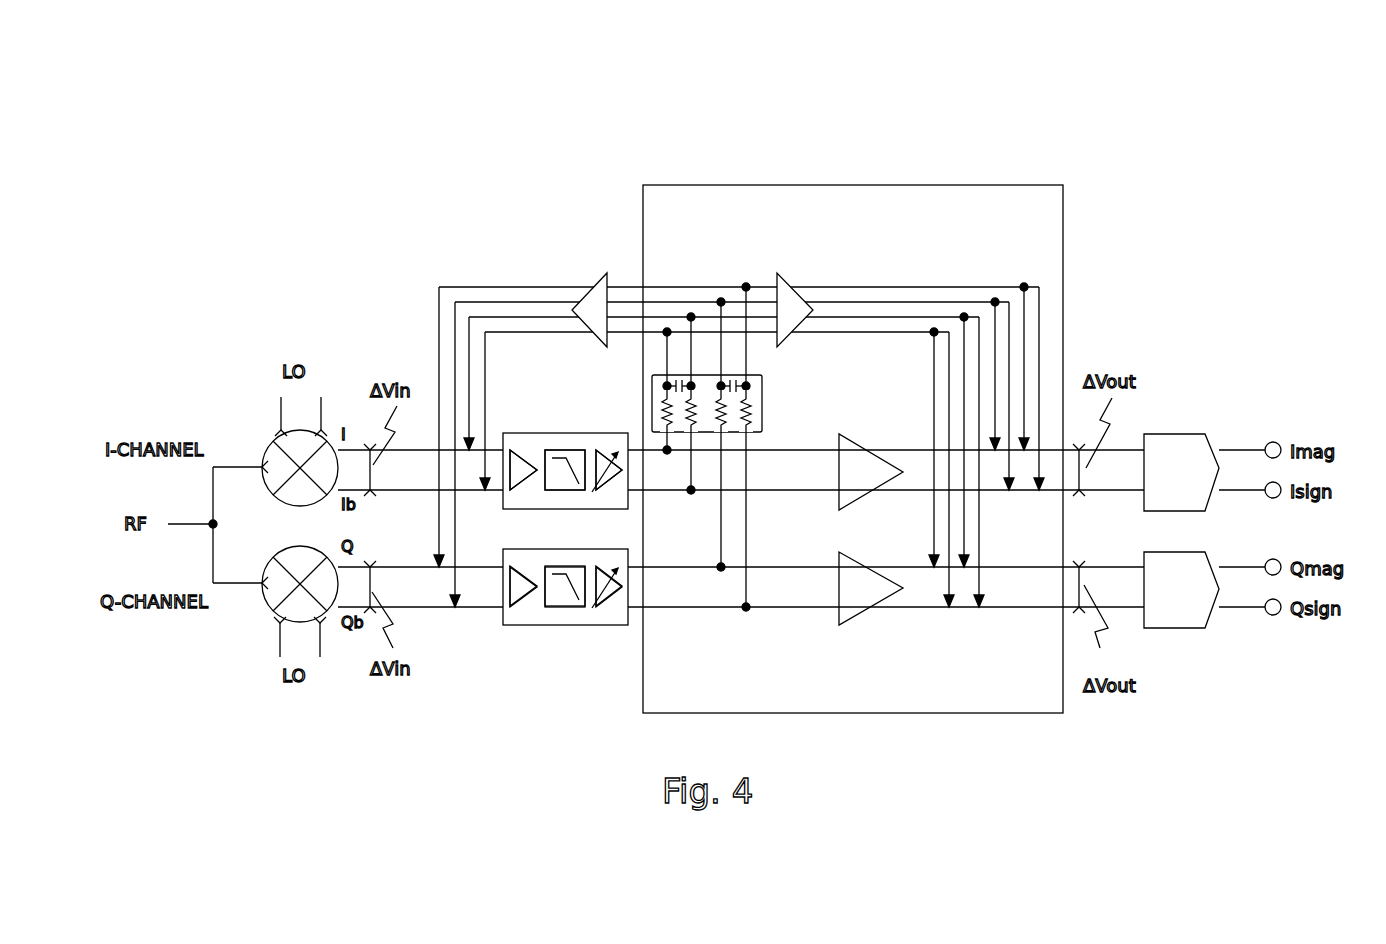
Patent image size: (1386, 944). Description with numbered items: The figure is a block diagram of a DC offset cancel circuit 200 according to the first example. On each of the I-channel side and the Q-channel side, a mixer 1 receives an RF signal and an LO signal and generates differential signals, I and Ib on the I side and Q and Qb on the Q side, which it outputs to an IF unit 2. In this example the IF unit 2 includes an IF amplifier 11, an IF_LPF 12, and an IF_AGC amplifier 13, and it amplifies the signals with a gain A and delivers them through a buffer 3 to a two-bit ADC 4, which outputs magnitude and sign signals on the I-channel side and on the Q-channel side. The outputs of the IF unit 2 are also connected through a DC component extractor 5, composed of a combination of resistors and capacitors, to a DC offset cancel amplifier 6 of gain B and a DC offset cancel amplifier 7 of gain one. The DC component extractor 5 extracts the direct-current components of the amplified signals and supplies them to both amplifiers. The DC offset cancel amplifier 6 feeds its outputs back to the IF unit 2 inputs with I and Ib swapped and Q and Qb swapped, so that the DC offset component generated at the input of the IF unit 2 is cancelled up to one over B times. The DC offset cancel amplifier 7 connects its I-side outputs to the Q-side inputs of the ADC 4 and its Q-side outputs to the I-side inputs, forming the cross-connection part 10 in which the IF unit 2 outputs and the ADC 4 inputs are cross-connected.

The DC offset cancel circuit 200 is at (832, 145).
The cross-connection part 10 is at (1064, 227).
The mixer 1 is at (270, 440).
The IF unit 2 is at (503, 497).
The IF amplifier 11 is at (515, 432).
The IF_LPF 12 is at (557, 450).
The IF_AGC amplifier 13 is at (600, 450).
The buffer 3 is at (860, 446).
The ADC 4 is at (1186, 434).
The DC component extractor 5 is at (762, 397).
The DC offset cancel amplifier 6 is at (596, 273).
The DC offset cancel amplifier 7 is at (786, 273).